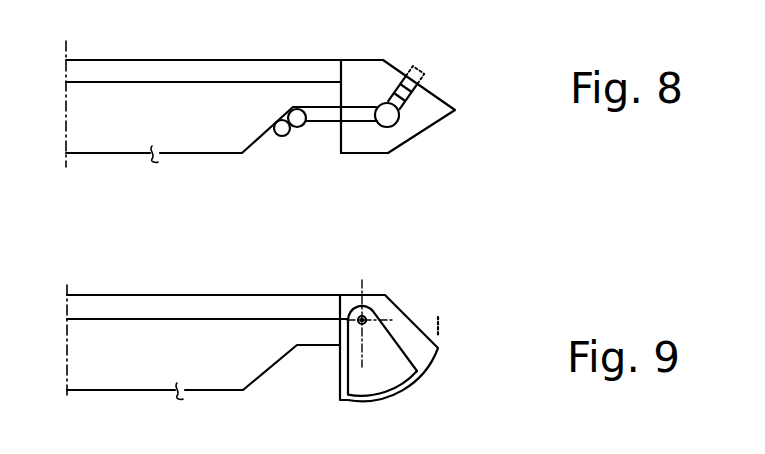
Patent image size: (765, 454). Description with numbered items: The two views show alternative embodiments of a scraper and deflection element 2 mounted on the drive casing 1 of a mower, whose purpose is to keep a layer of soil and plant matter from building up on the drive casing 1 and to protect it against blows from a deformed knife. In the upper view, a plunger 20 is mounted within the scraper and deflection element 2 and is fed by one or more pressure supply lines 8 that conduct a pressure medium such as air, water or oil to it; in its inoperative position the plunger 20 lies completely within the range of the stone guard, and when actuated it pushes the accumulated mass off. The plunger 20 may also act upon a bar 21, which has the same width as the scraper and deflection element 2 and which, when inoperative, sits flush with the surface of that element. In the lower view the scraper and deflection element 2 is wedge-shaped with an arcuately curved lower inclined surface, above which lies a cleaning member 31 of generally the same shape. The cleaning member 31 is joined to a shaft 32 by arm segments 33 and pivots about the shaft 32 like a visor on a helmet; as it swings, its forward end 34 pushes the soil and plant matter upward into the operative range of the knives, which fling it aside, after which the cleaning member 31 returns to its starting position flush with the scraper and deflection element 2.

In FIG. 8, the drive casing 1 is at (221, 123).
In FIG. 9, the drive casing 1 is at (207, 362).
In FIG. 8, the scraper and deflection element 2 is at (384, 147).
In FIG. 9, the scraper and deflection element 2 is at (403, 318).
In FIG. 8, the pressure supply line 8 is at (285, 136).
In FIG. 8, the plunger 20 is at (394, 95).
In FIG. 8, the bar 21 is at (430, 77).
In FIG. 9, the cleaning member 31 is at (420, 372).
In FIG. 9, the shaft 32 is at (369, 304).
In FIG. 9, the arm segment 33 is at (368, 378).
In FIG. 9, the forward end 34 is at (444, 334).